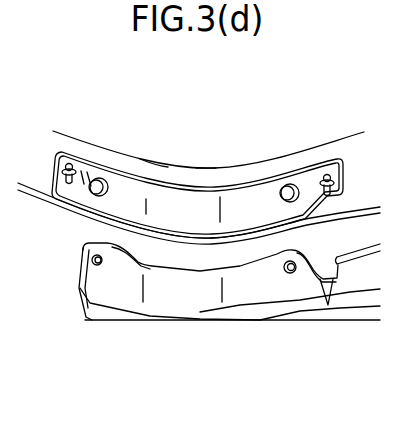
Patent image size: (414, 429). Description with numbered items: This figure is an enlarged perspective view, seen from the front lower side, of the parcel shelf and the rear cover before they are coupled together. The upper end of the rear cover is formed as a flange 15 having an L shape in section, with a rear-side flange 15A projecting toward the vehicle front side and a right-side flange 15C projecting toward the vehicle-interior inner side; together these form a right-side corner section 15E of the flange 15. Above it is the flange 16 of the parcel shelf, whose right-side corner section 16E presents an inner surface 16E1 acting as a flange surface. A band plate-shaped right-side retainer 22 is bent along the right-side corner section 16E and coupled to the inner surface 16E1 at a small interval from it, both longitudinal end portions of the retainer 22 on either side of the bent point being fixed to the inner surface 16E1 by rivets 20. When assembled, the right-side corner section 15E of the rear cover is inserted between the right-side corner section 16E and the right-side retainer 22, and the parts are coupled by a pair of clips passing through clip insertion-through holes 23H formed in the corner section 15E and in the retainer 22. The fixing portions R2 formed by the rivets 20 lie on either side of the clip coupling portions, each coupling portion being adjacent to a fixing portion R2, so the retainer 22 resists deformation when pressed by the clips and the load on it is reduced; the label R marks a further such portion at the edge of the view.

The flange 15 is at (239, 302).
The rear-side flange 15A is at (349, 292).
The right-side flange 15C is at (118, 293).
The right-side corner section 15E is at (221, 333).
The flange 16 is at (182, 150).
The right-side corner section 16E is at (159, 149).
The inner surface 16E1 is at (207, 164).
The rivet 20 is at (71, 164).
The right-side retainer 22 is at (177, 258).
The clip insertion-through hole 23H is at (286, 183).
The radius R is at (413, 111).
The fixing portion R2 is at (58, 206).